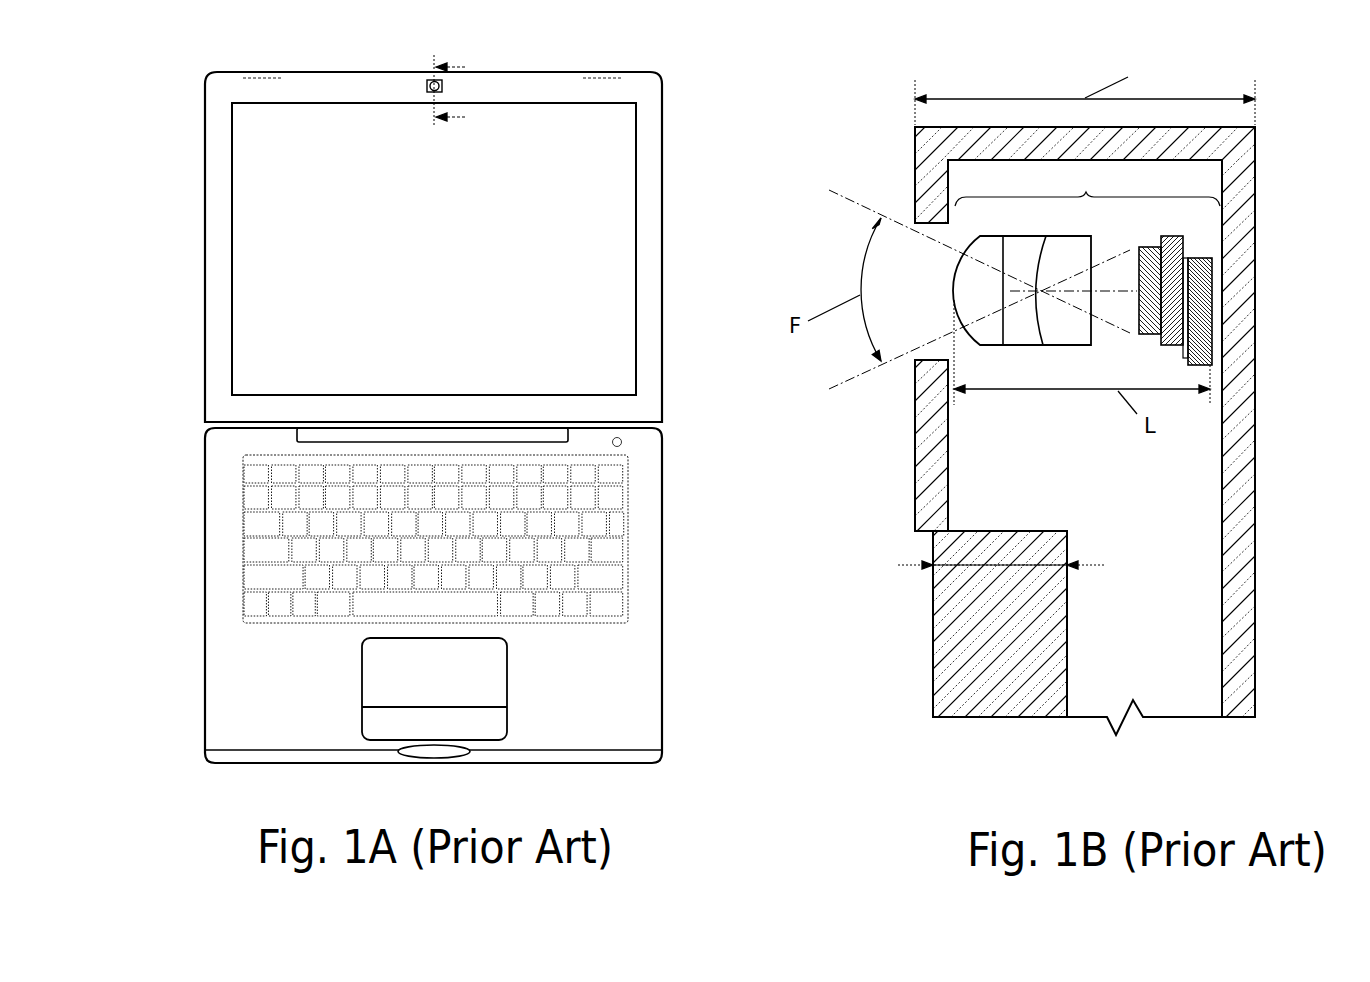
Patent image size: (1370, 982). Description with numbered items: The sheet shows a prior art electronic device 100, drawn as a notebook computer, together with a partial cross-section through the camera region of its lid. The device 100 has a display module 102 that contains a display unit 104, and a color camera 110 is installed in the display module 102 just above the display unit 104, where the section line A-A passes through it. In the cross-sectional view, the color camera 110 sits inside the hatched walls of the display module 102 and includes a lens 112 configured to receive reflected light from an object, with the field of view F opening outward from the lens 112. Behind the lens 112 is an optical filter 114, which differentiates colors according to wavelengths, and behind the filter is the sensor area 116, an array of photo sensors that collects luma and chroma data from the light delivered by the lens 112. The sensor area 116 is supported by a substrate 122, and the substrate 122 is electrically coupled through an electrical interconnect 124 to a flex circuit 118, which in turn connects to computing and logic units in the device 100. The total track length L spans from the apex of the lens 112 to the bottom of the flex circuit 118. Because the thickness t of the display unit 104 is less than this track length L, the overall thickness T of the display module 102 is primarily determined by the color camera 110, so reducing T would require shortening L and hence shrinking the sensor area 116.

In FIG. 1A, the electronic device 100 is at (482, 399).
In FIG. 1A, the display module 102 is at (476, 229).
In FIG. 1B, the display module 102 is at (1286, 526).
In FIG. 1A, the display unit 104 is at (625, 305).
In FIG. 1B, the display unit 104 is at (956, 606).
In FIG. 1A, the color camera 110 is at (430, 82).
In FIG. 1B, the color camera 110 is at (1089, 263).
In FIG. 1B, the lens 112 is at (993, 248).
In FIG. 1B, the optical filter 114 is at (1143, 252).
In FIG. 1B, the sensor area 116 is at (1158, 252).
In FIG. 1B, the flex circuit 118 is at (1206, 310).
In FIG. 1B, the substrate 122 is at (1212, 270).
In FIG. 1B, the electrical interconnect 124 is at (1191, 258).